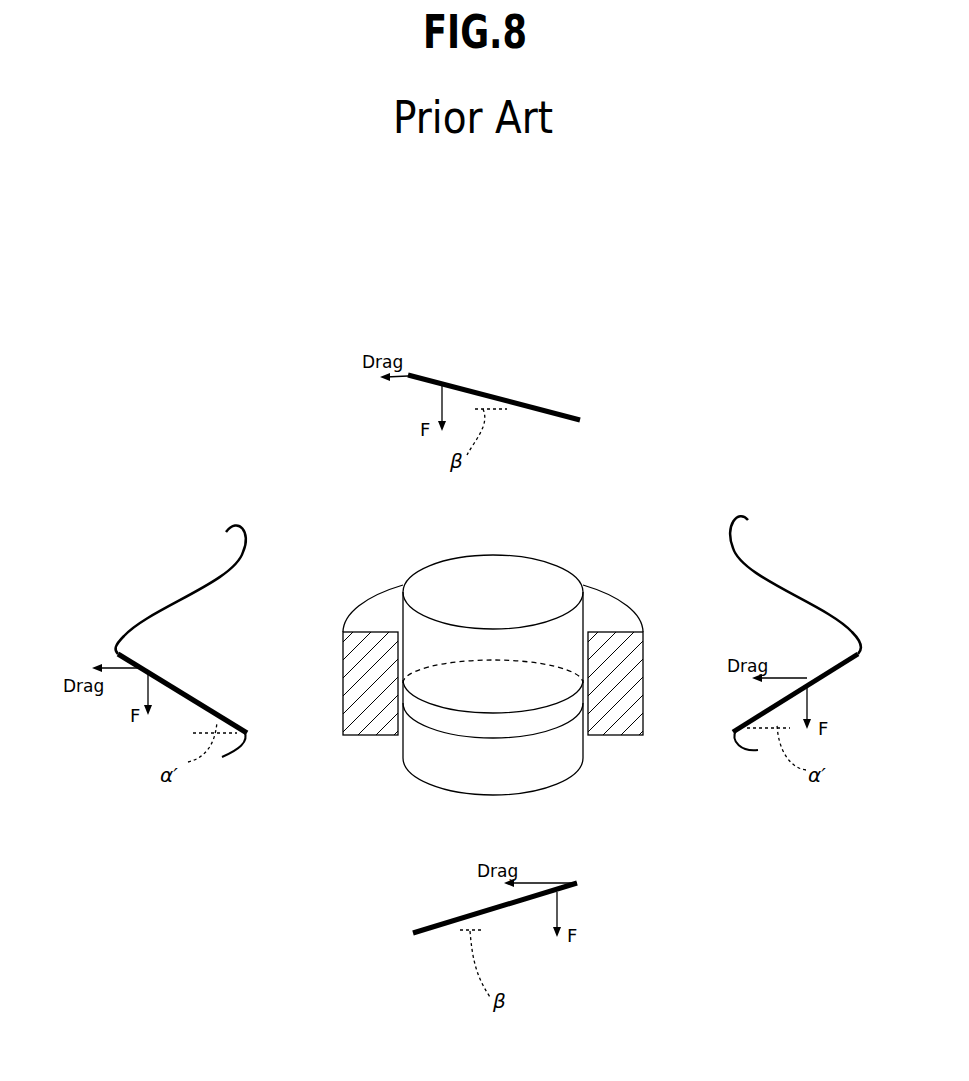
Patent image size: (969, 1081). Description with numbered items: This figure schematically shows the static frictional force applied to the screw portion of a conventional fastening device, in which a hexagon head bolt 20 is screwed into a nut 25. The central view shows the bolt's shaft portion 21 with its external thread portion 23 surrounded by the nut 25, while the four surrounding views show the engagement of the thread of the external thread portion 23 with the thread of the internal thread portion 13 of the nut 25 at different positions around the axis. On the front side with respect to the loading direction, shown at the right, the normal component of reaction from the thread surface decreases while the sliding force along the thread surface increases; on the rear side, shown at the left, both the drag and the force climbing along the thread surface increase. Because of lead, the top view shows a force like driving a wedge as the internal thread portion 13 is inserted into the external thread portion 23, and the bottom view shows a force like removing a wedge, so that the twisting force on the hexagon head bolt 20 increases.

The internal thread portion 13 is at (552, 416).
The hexagon head bolt 20 is at (552, 564).
The shaft portion 21 is at (548, 770).
The external thread portion 23 is at (527, 402).
The nut 25 is at (336, 640).